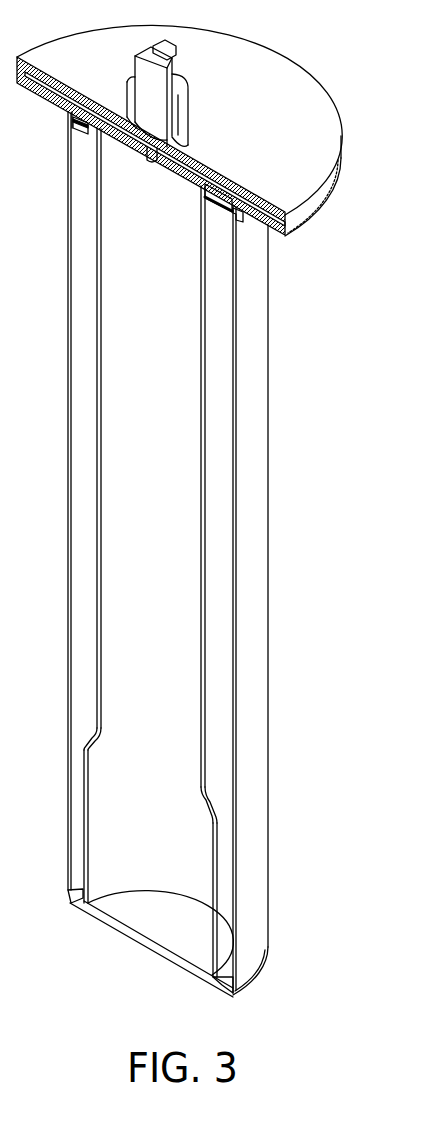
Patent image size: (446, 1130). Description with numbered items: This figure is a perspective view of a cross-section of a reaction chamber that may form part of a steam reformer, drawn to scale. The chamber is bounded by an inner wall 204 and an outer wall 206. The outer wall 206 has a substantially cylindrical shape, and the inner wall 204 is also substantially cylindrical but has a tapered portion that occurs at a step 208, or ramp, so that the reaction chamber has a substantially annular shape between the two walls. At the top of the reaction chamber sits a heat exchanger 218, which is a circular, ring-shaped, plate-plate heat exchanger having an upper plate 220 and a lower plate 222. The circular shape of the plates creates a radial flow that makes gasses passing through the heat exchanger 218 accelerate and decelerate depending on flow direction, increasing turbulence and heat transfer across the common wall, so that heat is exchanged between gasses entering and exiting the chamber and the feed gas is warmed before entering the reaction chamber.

The inner wall 204 is at (118, 552).
The outer wall 206 is at (68, 408).
The step 208 is at (86, 734).
The heat exchanger 218 is at (223, 150).
The upper plate 220 is at (276, 82).
The lower plate 222 is at (293, 230).